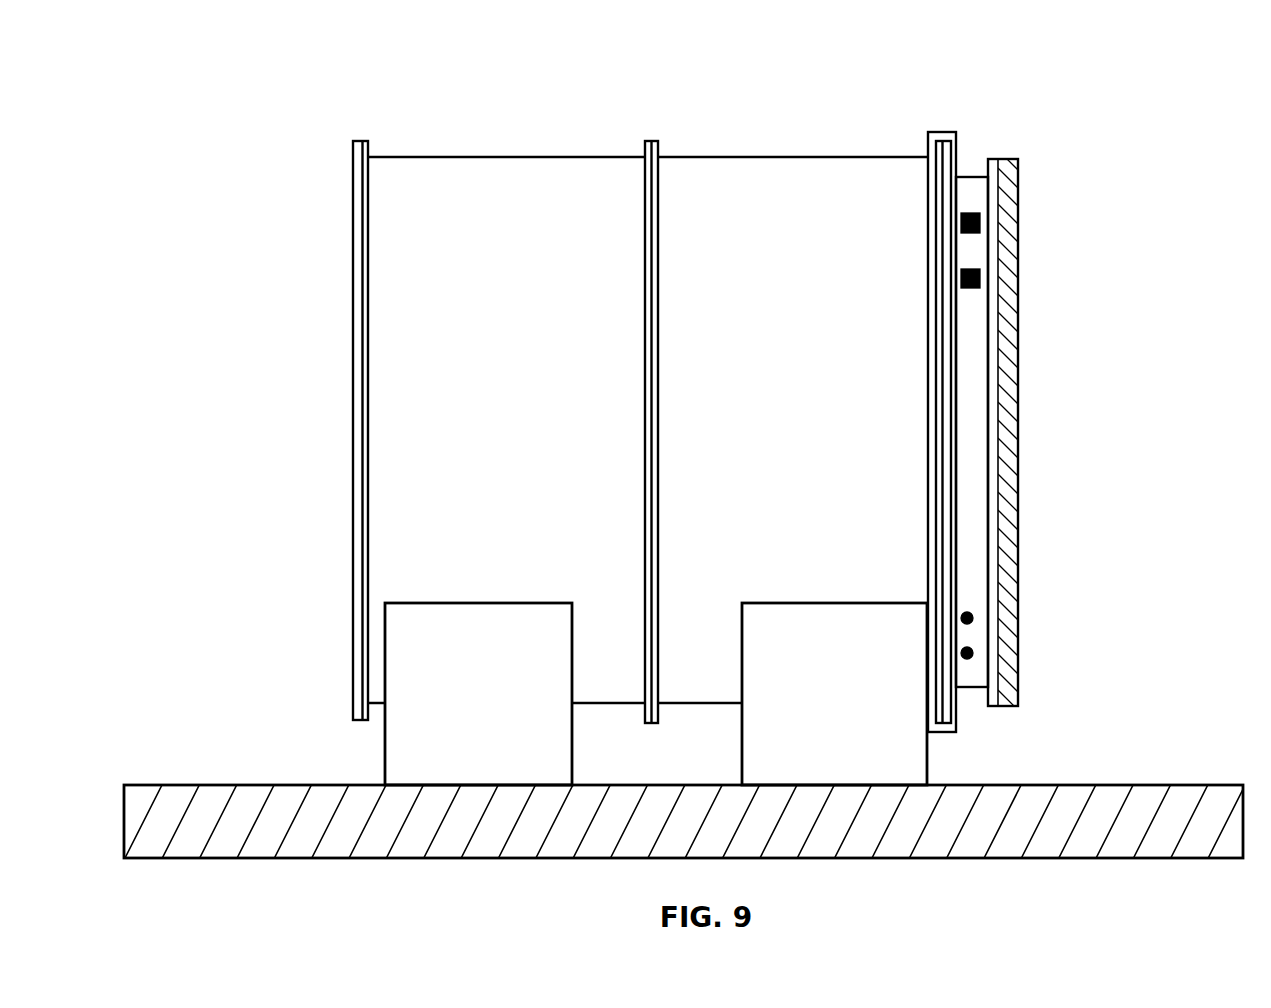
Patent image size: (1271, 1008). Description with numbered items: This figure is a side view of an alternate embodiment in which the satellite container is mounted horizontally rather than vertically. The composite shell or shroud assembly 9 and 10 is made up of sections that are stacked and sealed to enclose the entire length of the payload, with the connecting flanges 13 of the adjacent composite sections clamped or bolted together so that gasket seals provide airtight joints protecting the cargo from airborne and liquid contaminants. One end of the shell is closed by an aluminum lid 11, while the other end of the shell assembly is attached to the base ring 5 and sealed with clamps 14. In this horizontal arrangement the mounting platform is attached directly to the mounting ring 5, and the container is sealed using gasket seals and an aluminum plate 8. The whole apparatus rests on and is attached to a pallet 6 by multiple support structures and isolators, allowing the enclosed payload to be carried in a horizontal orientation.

The base ring 5 is at (982, 497).
The pallet 6 is at (167, 767).
The aluminum plate 8 is at (1032, 267).
The composite shell section 9 is at (832, 368).
The composite shell section 10 is at (435, 338).
The aluminum lid 11 is at (324, 166).
The connecting flanges 13 is at (636, 141).
The clamps 14 is at (980, 131).